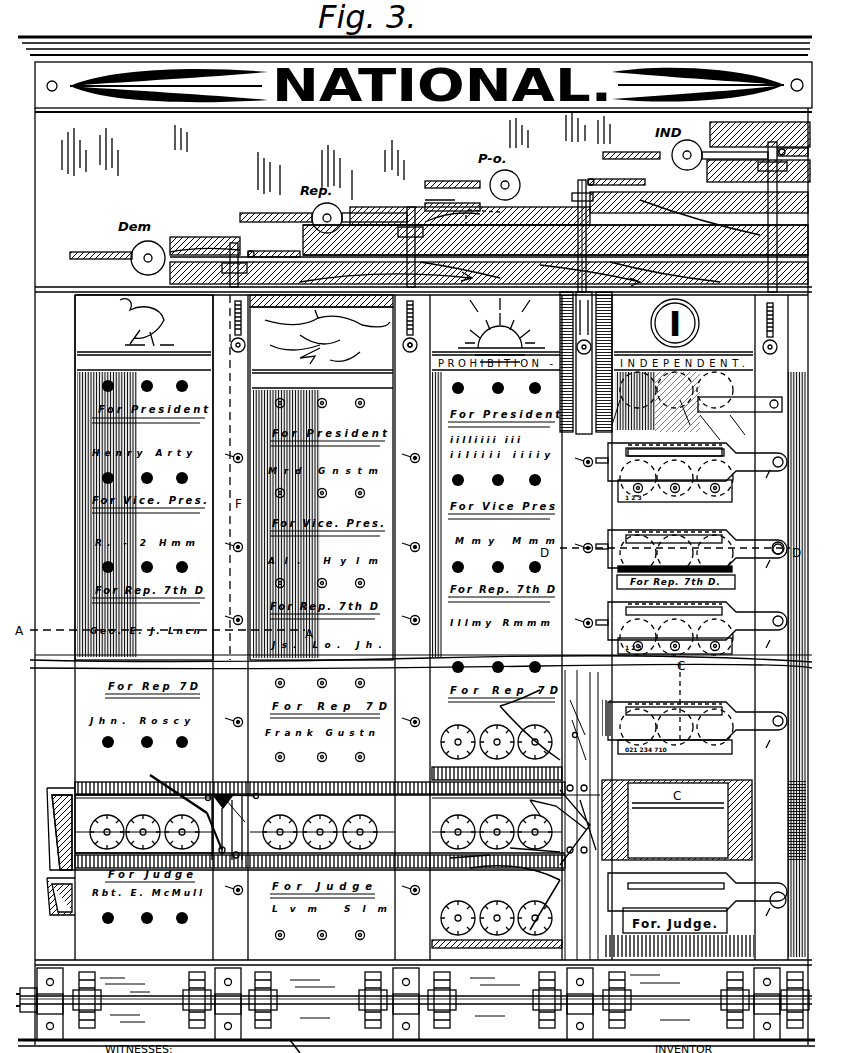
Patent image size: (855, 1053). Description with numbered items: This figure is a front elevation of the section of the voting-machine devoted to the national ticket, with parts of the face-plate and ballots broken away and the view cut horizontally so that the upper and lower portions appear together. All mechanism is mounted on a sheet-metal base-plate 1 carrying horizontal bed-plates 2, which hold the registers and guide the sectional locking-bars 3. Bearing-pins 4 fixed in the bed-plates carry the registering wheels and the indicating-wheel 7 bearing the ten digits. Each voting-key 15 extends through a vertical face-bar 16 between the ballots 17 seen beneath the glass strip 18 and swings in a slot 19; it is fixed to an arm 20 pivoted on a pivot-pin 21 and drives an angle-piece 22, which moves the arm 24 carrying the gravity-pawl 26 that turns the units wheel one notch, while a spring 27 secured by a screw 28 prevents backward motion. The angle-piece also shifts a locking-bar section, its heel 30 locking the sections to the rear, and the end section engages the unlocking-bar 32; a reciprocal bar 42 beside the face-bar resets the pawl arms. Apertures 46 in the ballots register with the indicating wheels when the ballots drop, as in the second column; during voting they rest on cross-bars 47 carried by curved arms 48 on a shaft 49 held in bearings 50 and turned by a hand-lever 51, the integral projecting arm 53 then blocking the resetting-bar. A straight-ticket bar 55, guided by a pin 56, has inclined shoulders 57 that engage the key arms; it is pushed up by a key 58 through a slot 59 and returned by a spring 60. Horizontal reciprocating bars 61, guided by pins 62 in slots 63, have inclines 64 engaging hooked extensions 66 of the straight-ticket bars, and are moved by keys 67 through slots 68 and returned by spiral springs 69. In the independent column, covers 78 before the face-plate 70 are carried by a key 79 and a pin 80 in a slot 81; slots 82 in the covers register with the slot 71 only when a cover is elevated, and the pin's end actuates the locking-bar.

The base-plate 1 is at (215, 240).
The bed-plate 2 is at (144, 824).
The locking-bar 3 is at (126, 800).
The bearing-pin 4 is at (100, 833).
The indicating-wheel 7 is at (293, 813).
The voting-key 15 is at (321, 736).
The face-bar 16 is at (503, 477).
The ballot 17 is at (203, 399).
The glass strip 18 is at (205, 655).
The slot 19 is at (236, 452).
The arm 20 is at (245, 820).
The pivot-pin 21 is at (585, 811).
The angle-piece 22 is at (584, 815).
The arm 24 is at (563, 827).
The gravity-pawl 26 is at (549, 700).
The spring 27 is at (171, 797).
The screw or bolt 28 is at (788, 810).
The heel 30 is at (582, 798).
The unlocking-bar 32 is at (60, 851).
The reciprocal bar 42 is at (570, 676).
The aperture 46 is at (186, 760).
The cross-bar 47 is at (175, 961).
The curved arm 48 is at (625, 995).
The shaft 49 is at (672, 1008).
The bearing 50 is at (50, 975).
The hand-lever 51 is at (27, 987).
The projecting arm 53 is at (91, 1021).
The straight-ticket bar 55 is at (608, 318).
The pin 56 is at (592, 331).
The inclined face or shoulder 57 is at (420, 332).
The key 58 is at (324, 343).
The slot 59 is at (766, 321).
The spring 60 is at (298, 288).
The horizontal reciprocating bar 61 is at (186, 240).
The pin 62 is at (430, 220).
The slot 63 is at (270, 251).
The incline or shoulder 64 is at (468, 205).
The extension 66 is at (555, 240).
The key 67 is at (149, 243).
The slot 68 is at (101, 268).
The spiral spring 69 is at (520, 290).
The face-plate 70 is at (697, 483).
The slot 71 is at (720, 614).
The cover 78 is at (697, 642).
The key 79 is at (776, 566).
The pin 80 is at (620, 808).
The slot 81 is at (605, 538).
The slot 82 is at (689, 589).